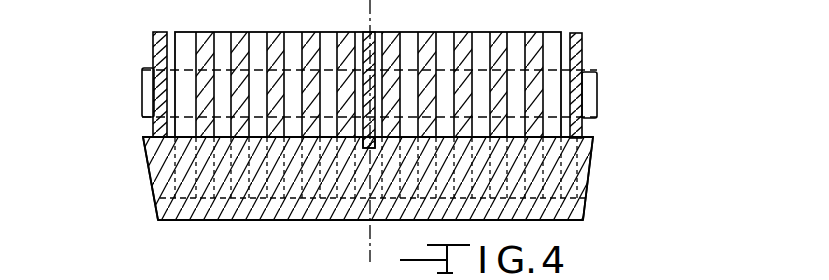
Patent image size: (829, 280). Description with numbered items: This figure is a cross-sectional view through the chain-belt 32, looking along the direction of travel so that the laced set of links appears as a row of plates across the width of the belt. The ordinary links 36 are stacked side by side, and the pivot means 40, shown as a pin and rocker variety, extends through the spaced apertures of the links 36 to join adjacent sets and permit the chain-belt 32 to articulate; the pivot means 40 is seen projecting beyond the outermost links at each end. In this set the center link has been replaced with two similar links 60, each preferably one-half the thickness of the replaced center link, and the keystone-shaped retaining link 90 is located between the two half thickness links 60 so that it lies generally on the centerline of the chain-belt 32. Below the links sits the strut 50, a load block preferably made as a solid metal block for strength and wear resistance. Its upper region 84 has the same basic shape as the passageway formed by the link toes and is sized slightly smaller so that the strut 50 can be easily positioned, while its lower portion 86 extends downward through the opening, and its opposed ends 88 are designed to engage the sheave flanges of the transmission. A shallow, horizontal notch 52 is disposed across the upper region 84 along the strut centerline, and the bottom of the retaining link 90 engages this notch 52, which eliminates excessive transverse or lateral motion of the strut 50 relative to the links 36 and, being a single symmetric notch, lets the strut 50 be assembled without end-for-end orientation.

The chain-belt 32 is at (396, 74).
The link 36 is at (223, 43).
The half thickness link 60 is at (380, 53).
The retaining link 90 is at (373, 33).
The pivot means 40 is at (588, 97).
The upper region 84 is at (170, 153).
The lower portion 86 is at (160, 212).
The opposed ends 88 is at (593, 168).
The strut 50 is at (196, 214).
The notch 52 is at (360, 220).